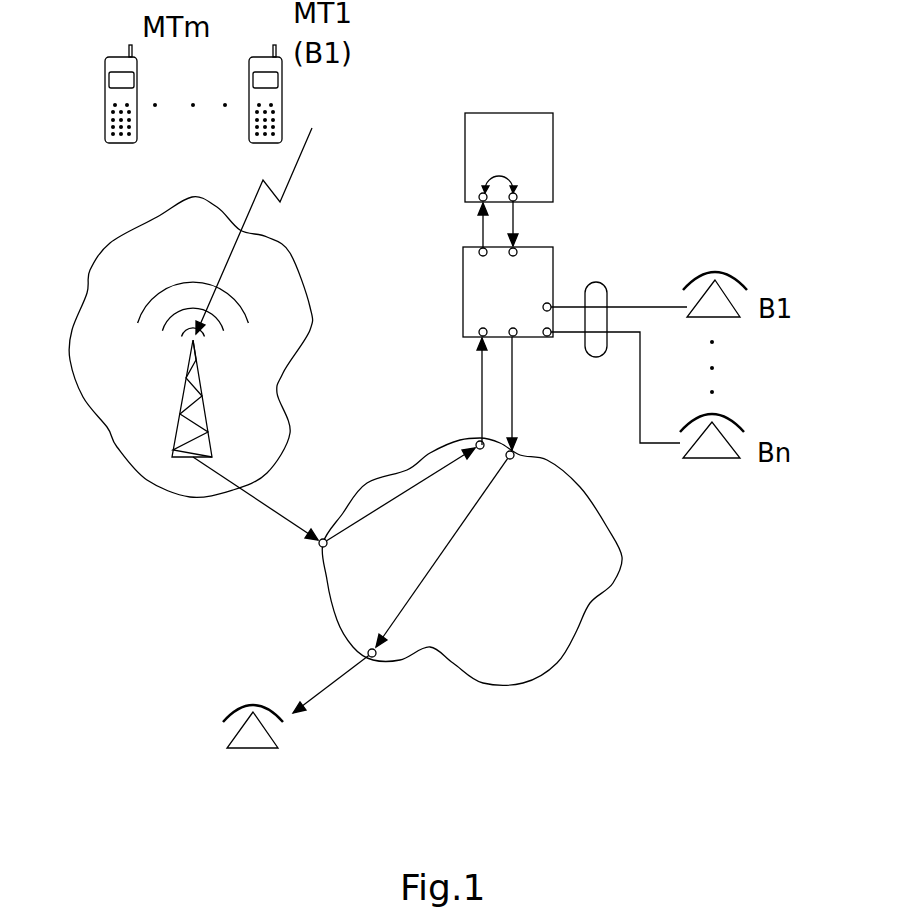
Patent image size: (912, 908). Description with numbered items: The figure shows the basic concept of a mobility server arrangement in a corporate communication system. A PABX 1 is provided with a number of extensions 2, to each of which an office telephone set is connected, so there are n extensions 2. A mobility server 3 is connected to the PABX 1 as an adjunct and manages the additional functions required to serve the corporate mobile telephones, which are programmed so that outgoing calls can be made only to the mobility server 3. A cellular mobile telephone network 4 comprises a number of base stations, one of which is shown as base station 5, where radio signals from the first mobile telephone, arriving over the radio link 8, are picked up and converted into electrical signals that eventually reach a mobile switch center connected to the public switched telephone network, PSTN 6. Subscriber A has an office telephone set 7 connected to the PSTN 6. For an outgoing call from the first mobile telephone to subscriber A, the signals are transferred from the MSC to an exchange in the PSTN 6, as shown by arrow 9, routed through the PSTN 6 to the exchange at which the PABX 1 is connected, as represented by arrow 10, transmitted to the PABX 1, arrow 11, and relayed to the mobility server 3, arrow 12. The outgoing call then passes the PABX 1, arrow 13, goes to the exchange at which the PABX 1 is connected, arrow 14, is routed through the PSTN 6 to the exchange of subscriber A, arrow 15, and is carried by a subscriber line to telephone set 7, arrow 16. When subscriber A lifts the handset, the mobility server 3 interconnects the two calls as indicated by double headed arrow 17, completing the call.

The PABX 1 is at (555, 273).
The extensions 2 is at (607, 290).
The mobility server 3 is at (555, 142).
The cellular mobile telephone network 4 is at (76, 312).
The base station 5 is at (180, 420).
The public switched telephone network 6 is at (623, 557).
The office telephone set 7 is at (280, 748).
The radio link to mobile terminal 8 is at (287, 177).
The arrow 9 is at (275, 517).
The arrow 10 is at (367, 520).
The arrow 11 is at (480, 413).
The arrow 12 is at (483, 222).
The arrow 13 is at (515, 228).
The arrow 14 is at (510, 378).
The arrow 15 is at (453, 545).
The arrow 16 is at (333, 683).
The double headed arrow 17 is at (492, 180).